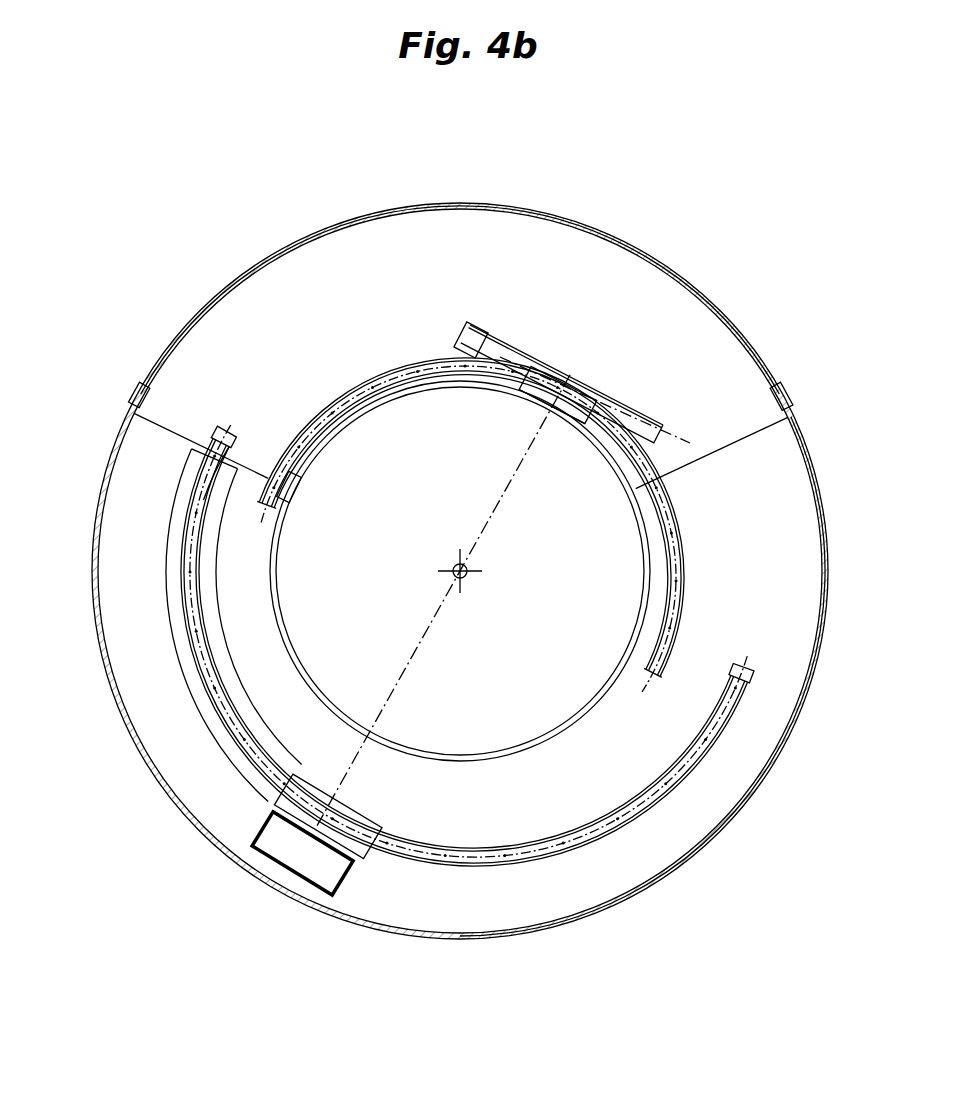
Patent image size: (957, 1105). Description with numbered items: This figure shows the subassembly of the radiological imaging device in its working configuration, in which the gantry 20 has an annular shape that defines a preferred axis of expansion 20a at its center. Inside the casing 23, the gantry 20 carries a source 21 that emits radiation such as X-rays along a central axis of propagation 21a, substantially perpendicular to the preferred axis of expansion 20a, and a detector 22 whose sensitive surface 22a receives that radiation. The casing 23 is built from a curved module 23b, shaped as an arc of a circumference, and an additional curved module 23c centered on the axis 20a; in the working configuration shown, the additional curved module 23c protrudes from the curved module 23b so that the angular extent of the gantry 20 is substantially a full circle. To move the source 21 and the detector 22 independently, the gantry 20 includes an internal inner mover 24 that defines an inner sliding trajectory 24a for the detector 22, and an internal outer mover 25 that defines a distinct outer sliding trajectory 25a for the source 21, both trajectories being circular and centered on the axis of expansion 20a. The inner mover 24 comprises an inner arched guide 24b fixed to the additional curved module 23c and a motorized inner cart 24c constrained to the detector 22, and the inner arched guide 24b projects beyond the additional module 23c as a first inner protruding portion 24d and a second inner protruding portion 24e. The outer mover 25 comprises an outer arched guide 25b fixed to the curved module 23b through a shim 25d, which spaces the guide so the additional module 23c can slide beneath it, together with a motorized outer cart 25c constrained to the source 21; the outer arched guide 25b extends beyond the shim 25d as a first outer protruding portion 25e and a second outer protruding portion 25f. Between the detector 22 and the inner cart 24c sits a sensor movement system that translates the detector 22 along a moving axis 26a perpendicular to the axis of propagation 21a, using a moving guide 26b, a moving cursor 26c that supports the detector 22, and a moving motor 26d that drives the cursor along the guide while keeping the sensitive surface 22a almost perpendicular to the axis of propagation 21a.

The gantry 20 is at (116, 367).
The preferred axis of expansion 20a is at (468, 566).
The source 21 is at (250, 835).
The central axis of propagation 21a is at (412, 652).
The detector 22 is at (567, 430).
The sensitive surface 22a is at (528, 393).
The casing 23 is at (720, 866).
The curved module 23b is at (760, 716).
The additional curved module 23c is at (317, 265).
The internal inner mover 24 is at (722, 516).
The inner sliding trajectory 24a is at (633, 700).
The inner arched guide 24b is at (386, 356).
The inner cart 24c is at (471, 333).
The first inner protruding portion 24d is at (688, 601).
The second inner protruding portion 24e is at (285, 504).
The internal outer mover 25 is at (480, 785).
The outer sliding trajectory 25a is at (752, 655).
The outer arched guide 25b is at (503, 846).
The outer cart 25c is at (318, 792).
The shim 25d is at (178, 667).
The first outer protruding portion 25e is at (547, 838).
The second outer protruding portion 25f is at (228, 448).
The moving axis 26a is at (682, 447).
The moving guide 26b is at (622, 424).
The moving cursor 26c is at (566, 384).
The moving motor 26d is at (488, 351).